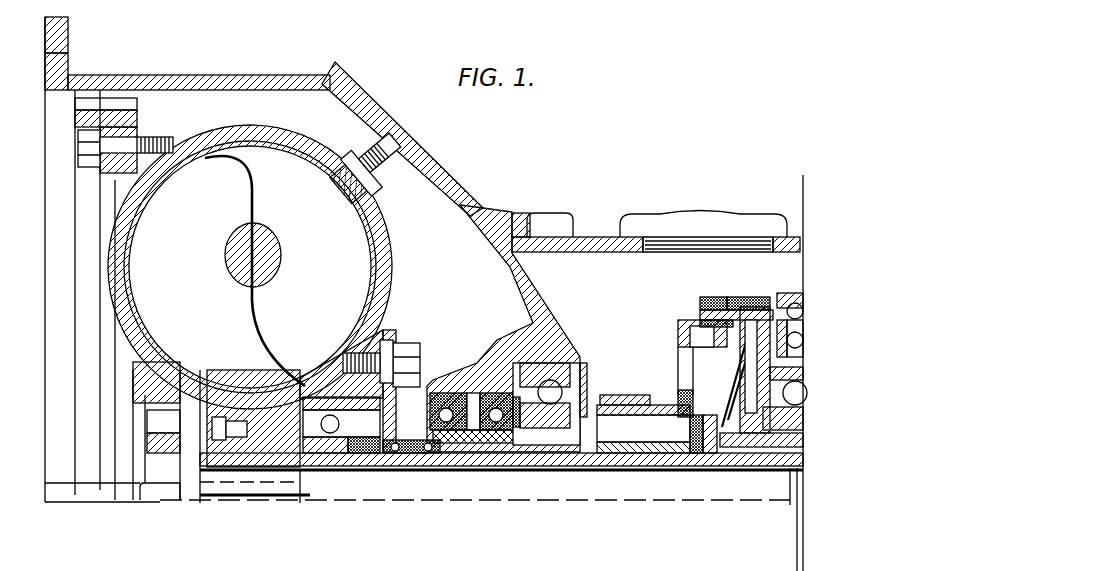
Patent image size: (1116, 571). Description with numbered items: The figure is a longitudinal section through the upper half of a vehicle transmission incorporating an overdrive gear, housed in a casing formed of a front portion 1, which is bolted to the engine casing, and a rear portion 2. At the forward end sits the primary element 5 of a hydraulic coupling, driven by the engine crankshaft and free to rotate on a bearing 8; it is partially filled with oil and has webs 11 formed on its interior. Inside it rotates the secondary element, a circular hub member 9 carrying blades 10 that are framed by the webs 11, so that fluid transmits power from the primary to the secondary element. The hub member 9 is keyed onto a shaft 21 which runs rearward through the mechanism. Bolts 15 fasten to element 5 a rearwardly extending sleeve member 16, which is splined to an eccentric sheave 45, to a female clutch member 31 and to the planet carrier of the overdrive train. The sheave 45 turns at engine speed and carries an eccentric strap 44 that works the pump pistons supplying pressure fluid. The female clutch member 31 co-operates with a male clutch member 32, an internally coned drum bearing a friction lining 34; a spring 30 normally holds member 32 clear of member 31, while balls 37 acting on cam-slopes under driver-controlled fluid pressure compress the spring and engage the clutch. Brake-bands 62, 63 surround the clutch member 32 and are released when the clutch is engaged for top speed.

The front portion of the casing 1 is at (493, 210).
The rear portion of the casing 2 is at (798, 247).
The primary element of the hydraulic coupling 5 is at (110, 258).
The bearing 8 is at (330, 433).
The hub member 9 is at (281, 422).
The blades 10 is at (213, 355).
The webs 11 is at (303, 332).
The bolts 15 is at (417, 347).
The sleeve member 16 is at (615, 458).
The shaft 21 is at (770, 490).
The spring 30 is at (736, 440).
The female clutch member 31 is at (683, 331).
The male clutch member 32 is at (757, 297).
The friction lining 34 is at (700, 312).
The balls 37 is at (773, 348).
The eccentric strap 44 is at (613, 395).
The eccentric sheave 45 is at (663, 443).
The brake-band 62 is at (717, 297).
The brake-band 63 is at (753, 295).